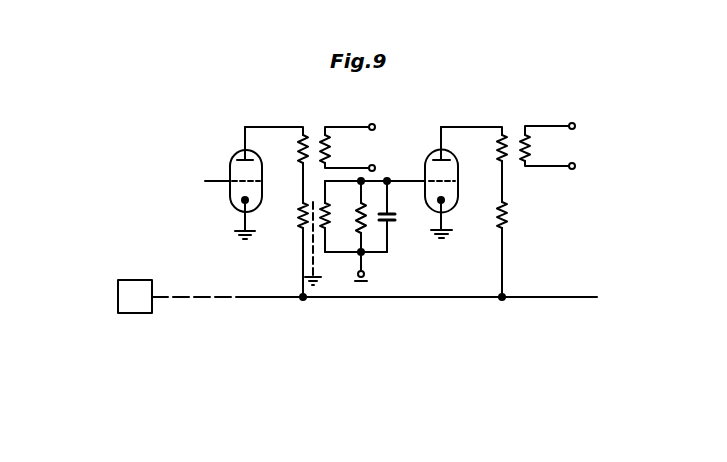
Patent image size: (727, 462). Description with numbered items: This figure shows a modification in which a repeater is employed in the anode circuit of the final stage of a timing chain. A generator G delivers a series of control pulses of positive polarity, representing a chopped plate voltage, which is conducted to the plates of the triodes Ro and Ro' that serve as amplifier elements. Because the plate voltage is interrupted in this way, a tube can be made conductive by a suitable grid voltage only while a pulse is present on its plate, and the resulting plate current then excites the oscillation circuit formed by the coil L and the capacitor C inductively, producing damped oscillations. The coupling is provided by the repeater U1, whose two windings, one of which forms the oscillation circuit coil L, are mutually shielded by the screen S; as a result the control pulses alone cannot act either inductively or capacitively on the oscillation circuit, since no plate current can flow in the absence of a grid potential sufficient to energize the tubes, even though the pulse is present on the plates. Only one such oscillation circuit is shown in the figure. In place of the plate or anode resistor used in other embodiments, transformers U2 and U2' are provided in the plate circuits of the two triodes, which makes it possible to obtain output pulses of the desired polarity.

The generator G is at (168, 277).
The triode Ro is at (233, 183).
The transformer U2 is at (310, 160).
The repeater U1 is at (293, 250).
The screen S is at (319, 246).
The oscillation circuit coil L is at (332, 216).
The oscillation circuit capacitor C is at (395, 216).
The triode Ro' is at (429, 182).
The transformer U2' is at (508, 156).